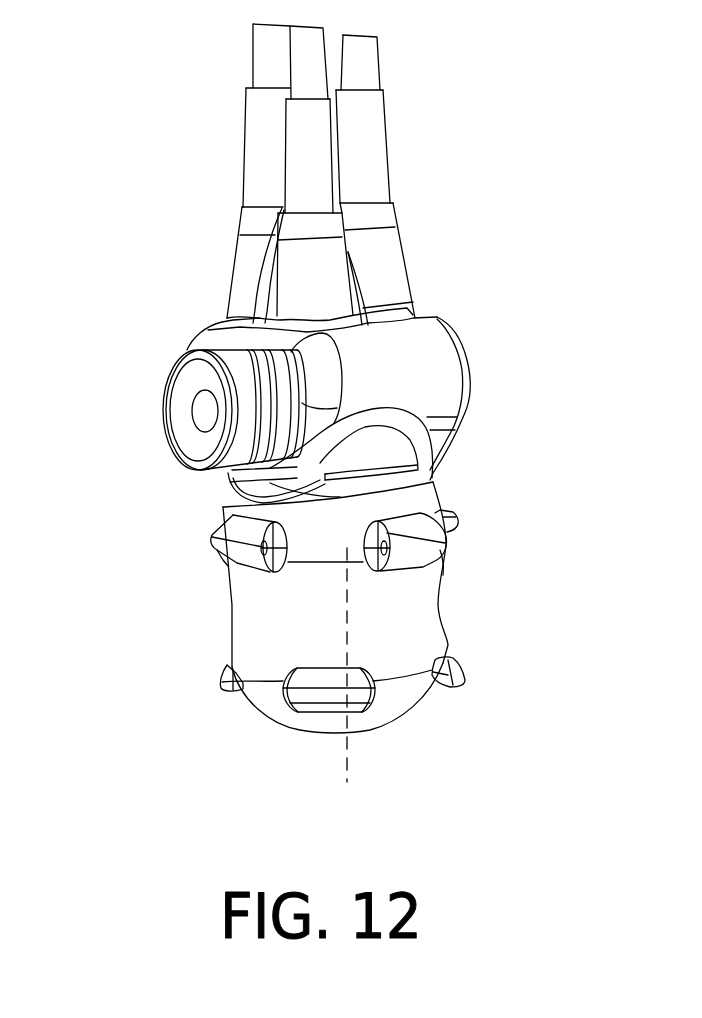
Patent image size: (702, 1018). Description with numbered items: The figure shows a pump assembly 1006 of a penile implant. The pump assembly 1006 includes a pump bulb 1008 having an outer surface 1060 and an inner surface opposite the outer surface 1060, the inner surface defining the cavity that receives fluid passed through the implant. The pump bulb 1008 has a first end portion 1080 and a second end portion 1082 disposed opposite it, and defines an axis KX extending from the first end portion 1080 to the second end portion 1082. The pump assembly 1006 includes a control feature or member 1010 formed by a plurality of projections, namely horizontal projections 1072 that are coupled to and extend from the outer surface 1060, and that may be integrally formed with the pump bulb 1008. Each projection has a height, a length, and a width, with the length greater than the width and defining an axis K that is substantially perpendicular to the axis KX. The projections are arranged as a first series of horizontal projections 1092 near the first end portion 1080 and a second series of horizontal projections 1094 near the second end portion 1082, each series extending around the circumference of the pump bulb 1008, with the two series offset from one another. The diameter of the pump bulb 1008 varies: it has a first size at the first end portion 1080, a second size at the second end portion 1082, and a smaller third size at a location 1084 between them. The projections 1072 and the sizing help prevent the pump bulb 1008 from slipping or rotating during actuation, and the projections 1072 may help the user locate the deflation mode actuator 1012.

The pump assembly 1006 is at (97, 363).
The deflation mode actuator 1012 is at (183, 425).
The second end portion 1082 is at (440, 492).
The control feature or member 1010 is at (460, 518).
The outer surface 1060 is at (443, 567).
The pump bulb 1008 is at (442, 603).
The location between the first end portion and the second end portion 1084 is at (443, 622).
The first end portion 1080 is at (410, 709).
The horizontal projections 1072 is at (213, 540).
The second series of horizontal projections 1094 is at (223, 560).
The first series of horizontal projections 1092 is at (236, 693).